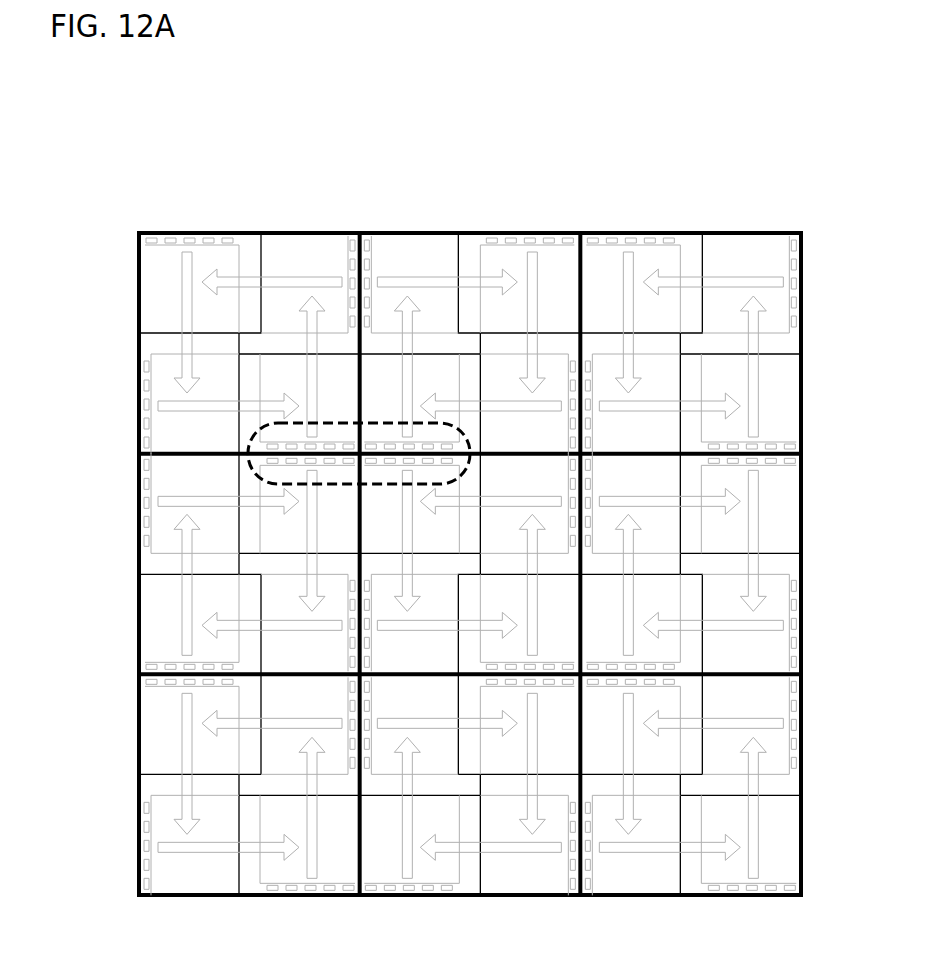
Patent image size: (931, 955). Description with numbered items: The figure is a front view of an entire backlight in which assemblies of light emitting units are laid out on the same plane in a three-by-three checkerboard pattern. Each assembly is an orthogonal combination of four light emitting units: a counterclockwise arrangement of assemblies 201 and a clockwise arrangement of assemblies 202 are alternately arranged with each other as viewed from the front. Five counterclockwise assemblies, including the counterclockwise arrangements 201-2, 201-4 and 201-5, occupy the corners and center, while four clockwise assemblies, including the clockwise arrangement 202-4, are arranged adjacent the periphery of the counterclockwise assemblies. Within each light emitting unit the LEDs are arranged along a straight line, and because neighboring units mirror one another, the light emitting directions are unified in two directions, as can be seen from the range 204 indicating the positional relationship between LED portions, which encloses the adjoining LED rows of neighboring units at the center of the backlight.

The range indicating the positional relationship between LED portions 204 is at (260, 423).
The counterclockwise arrangement of assemblies 201 is at (227, 233).
The clockwise arrangement of assemblies 202 is at (423, 233).
The counterclockwise arrangement of assemblies 201-2 is at (716, 233).
The counterclockwise arrangement of assemblies 201-4 is at (195, 896).
The clockwise arrangement of assemblies 202-4 is at (467, 896).
The counterclockwise arrangement of assemblies 201-5 is at (650, 896).